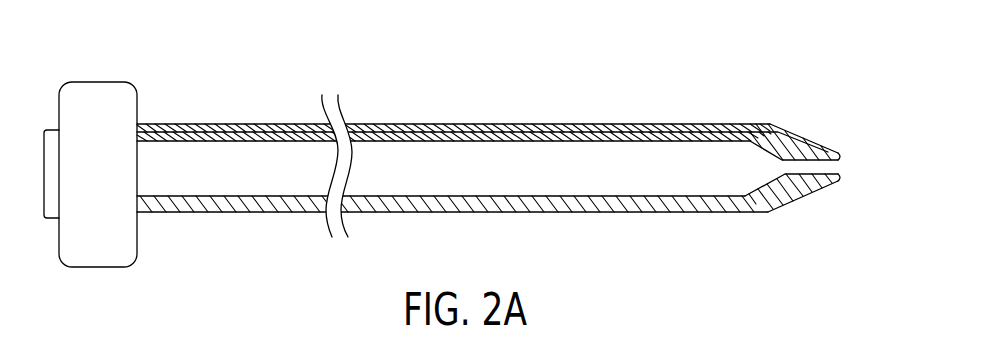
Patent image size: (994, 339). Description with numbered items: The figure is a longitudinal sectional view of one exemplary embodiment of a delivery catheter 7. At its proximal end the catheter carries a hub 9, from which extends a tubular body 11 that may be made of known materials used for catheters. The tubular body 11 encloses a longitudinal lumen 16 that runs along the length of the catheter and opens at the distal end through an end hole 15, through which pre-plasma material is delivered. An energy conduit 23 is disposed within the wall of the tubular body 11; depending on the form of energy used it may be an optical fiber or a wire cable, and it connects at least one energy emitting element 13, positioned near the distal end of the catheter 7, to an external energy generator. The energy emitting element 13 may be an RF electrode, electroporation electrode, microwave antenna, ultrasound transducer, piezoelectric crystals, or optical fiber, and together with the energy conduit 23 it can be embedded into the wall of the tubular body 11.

The hub 9 is at (106, 78).
The delivery catheter 7 is at (576, 100).
The energy conduit 23 is at (463, 123).
The longitudinal lumen 16 is at (634, 182).
The tubular body 11 is at (411, 220).
The energy emitting element 13 is at (796, 122).
The end hole 15 is at (844, 165).